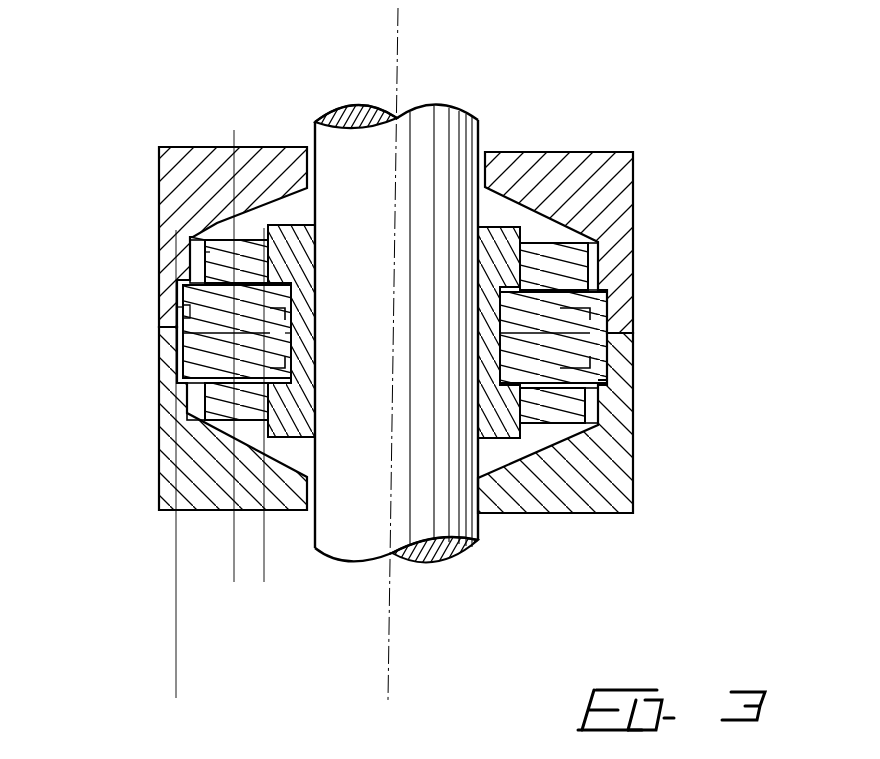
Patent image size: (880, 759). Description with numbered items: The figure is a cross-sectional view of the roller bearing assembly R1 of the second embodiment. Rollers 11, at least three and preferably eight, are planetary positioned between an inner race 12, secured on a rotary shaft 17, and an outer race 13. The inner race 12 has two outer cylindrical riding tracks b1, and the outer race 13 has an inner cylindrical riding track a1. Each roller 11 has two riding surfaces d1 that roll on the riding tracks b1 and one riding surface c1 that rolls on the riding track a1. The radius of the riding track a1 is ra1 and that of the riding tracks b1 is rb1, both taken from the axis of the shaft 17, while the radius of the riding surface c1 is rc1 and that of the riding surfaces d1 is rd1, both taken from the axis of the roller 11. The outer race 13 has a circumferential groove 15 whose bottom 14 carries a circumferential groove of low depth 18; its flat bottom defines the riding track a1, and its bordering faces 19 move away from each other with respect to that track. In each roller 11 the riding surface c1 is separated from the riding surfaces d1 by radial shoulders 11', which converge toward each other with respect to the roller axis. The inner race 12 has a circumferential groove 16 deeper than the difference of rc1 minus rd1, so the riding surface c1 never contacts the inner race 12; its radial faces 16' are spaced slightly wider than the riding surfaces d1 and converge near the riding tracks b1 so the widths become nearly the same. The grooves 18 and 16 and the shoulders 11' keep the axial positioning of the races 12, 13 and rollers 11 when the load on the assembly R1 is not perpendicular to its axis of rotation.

The roller 11 is at (453, 334).
The radial shoulders 11' is at (692, 326).
The inner race 12 is at (522, 258).
The outer race 13 is at (612, 190).
The bottom 14 is at (527, 412).
The circumferential groove 15 is at (530, 440).
The circumferential groove 16 is at (483, 360).
The radial faces 16' is at (444, 402).
The rotary shaft 17 is at (437, 118).
The circumferential groove of low depth 18 is at (580, 308).
The bordering faces 19 is at (593, 288).
The roller bearing assembly R1 is at (508, 94).
The inner cylindrical riding track a1 is at (187, 307).
The outer cylindrical riding tracks b1 is at (262, 430).
The riding surface c1 is at (290, 333).
The riding surfaces d1 is at (210, 405).
The radius of riding track a1 ra1 is at (389, 685).
The radius of riding tracks b1 rb1 is at (389, 635).
The radius of riding surface c1 rc1 is at (230, 635).
The radius of riding surfaces d1 rd1 is at (264, 635).